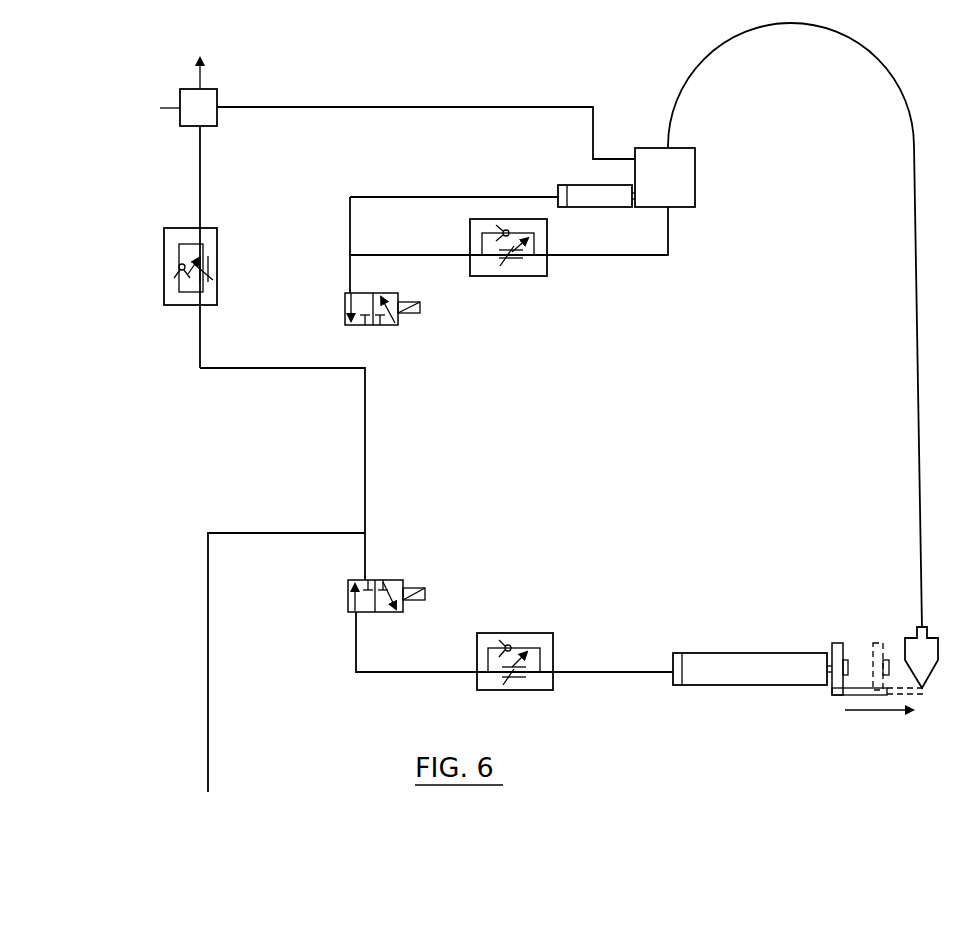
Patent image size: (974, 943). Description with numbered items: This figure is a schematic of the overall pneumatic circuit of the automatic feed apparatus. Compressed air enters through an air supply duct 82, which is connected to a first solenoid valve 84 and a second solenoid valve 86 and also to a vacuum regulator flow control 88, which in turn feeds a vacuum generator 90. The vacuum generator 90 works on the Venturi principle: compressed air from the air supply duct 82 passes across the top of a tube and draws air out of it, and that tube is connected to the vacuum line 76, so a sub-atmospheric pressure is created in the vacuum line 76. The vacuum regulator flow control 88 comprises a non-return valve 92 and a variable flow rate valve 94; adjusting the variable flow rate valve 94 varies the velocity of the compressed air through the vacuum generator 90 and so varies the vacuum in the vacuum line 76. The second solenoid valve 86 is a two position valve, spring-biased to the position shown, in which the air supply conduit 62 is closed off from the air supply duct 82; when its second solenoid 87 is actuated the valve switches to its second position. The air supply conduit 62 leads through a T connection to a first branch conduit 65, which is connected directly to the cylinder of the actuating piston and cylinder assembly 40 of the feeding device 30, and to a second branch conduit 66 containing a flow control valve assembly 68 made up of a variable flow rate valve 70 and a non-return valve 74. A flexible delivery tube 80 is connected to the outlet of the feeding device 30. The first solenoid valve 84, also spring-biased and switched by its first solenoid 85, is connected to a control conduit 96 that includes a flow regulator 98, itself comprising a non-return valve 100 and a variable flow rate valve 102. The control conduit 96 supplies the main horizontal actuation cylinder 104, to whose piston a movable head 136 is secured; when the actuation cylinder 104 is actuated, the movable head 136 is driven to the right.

The feeding device 30 is at (697, 167).
The actuating piston and cylinder assembly 40 is at (584, 185).
The air supply conduit 62 is at (349, 272).
The first branch conduit 65 is at (381, 197).
The second branch conduit 66 is at (380, 255).
The flow control valve assembly 68 is at (528, 240).
The variable flow rate valve 70 is at (517, 268).
The non-return valve 74 is at (508, 230).
The vacuum line 76 is at (341, 107).
The flexible delivery tube 80 is at (913, 168).
The air supply duct 82 is at (209, 622).
The first solenoid valve 84 is at (403, 585).
The first solenoid 85 is at (424, 601).
The second solenoid valve 86 is at (410, 316).
The second solenoid 87 is at (421, 308).
The vacuum regulator flow control 88 is at (190, 247).
The vacuum generator 90 is at (180, 108).
The non-return valve 92 is at (165, 258).
The variable flow rate valve 94 is at (218, 257).
The control conduit 96 is at (397, 676).
The flow regulator 98 is at (509, 658).
The non-return valve 100 is at (511, 645).
The variable flow rate valve 102 is at (515, 678).
The actuation cylinder 104 is at (730, 653).
The movable head 136 is at (832, 648).